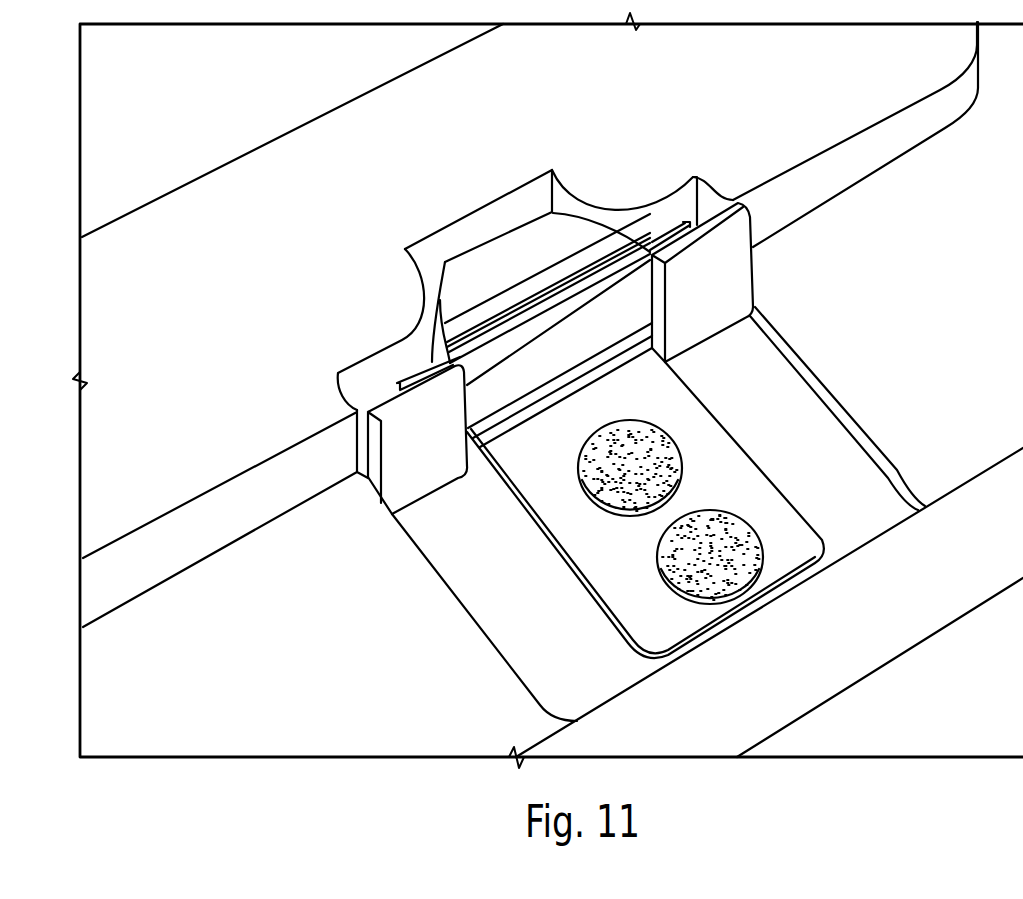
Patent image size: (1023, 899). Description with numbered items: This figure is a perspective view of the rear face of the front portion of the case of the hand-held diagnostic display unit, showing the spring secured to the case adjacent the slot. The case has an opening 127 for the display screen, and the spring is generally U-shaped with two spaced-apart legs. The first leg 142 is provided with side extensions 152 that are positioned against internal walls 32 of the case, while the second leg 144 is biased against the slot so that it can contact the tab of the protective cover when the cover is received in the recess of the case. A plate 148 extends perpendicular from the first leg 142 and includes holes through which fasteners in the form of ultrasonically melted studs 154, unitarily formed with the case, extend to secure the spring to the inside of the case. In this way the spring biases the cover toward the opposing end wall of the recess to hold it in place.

The opening 127 is at (340, 106).
The second leg 144 is at (513, 257).
The first leg 142 is at (587, 300).
The side extensions 152 is at (405, 350).
The internal walls 32 is at (397, 445).
The plate 148 is at (730, 485).
The ultrasonically melted studs 154 is at (655, 572).